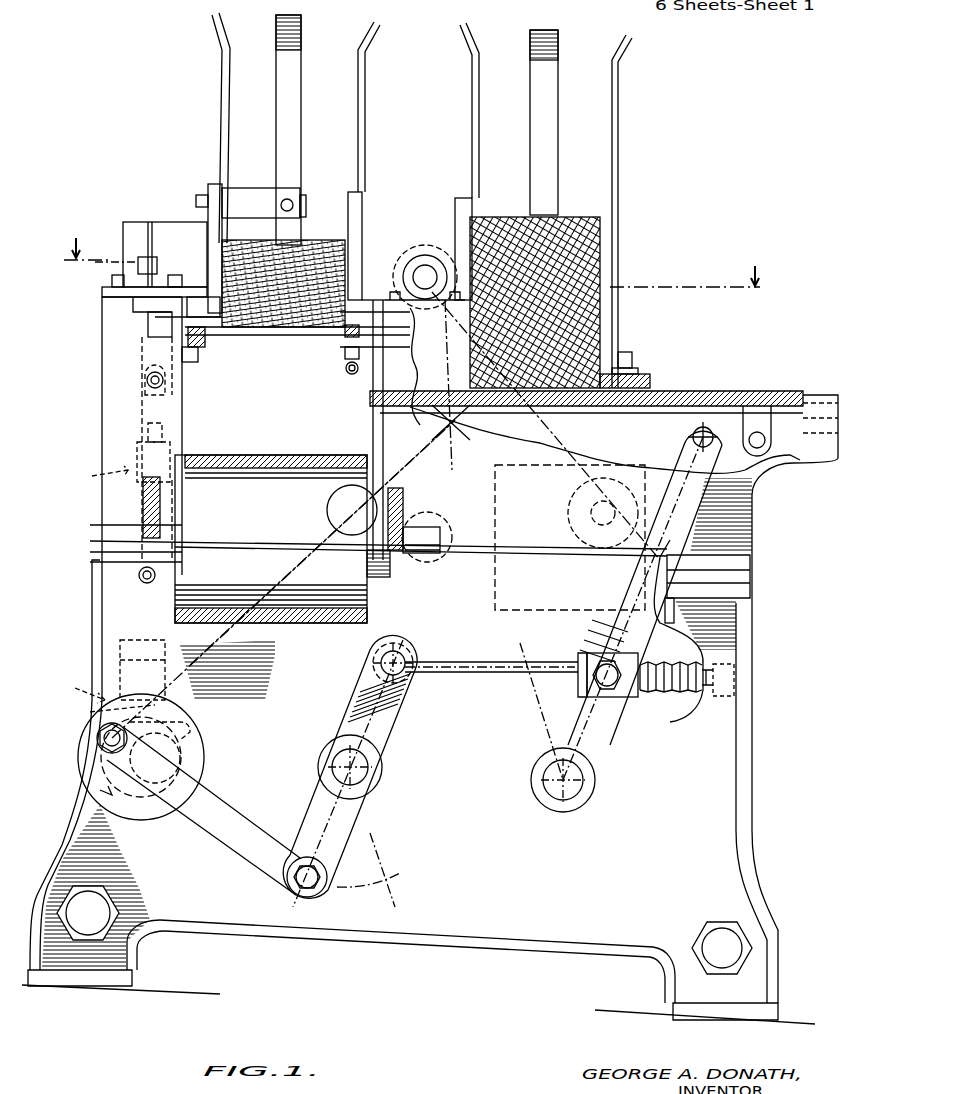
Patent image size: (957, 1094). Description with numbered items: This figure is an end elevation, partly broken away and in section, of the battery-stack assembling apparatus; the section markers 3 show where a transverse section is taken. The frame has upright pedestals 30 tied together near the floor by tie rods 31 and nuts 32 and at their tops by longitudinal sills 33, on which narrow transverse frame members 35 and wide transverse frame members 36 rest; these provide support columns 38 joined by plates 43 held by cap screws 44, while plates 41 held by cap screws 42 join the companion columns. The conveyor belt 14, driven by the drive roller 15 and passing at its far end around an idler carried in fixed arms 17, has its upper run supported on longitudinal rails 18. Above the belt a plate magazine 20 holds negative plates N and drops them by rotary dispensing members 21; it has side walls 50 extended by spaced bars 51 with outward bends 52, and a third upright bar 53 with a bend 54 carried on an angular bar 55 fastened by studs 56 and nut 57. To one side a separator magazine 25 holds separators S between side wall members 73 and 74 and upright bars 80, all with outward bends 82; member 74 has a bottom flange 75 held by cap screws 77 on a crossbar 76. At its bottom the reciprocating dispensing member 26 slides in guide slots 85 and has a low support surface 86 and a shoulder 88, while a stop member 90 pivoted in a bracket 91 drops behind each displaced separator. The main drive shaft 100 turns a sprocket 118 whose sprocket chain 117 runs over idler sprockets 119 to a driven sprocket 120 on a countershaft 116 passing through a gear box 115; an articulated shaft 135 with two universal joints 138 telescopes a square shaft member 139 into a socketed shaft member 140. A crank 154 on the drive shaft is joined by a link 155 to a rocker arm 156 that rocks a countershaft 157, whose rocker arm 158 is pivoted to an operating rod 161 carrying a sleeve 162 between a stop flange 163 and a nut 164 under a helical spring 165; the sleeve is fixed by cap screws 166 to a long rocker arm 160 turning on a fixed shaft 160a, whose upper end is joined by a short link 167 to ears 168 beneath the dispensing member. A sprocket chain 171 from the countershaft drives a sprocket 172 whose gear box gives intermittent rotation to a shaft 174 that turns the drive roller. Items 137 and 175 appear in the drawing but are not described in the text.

The section line 3 is at (412, 253).
The flexible belt 14 is at (232, 456).
The drive roller 15 is at (271, 539).
The fixed arms 17 is at (143, 500).
The longitudinal rails 18 is at (255, 478).
The supply magazine 20 is at (211, 118).
The rotary dispensing members 21 is at (205, 340).
The separator magazine 25 is at (620, 137).
The reciprocating dispensing member 26 is at (705, 395).
The base members or pedestals 30 is at (744, 800).
The tie rods 31 is at (96, 905).
The nuts 32 is at (116, 915).
The longitudinal sills 33 is at (100, 545).
The narrow transverse frame members 35 is at (222, 540).
The wide transverse frame members 36 is at (540, 400).
The support column 38 is at (372, 412).
The plates 41 is at (105, 290).
The cap screws 42 is at (112, 274).
The plates 43 is at (546, 426).
The cap screws 44 is at (393, 292).
The side walls 50 is at (215, 186).
The spaced bars 51 is at (222, 78).
The outward bends 52 is at (215, 30).
The upright bar 53 is at (301, 104).
The bend 54 is at (296, 33).
The angular bar 55 is at (240, 190).
The studs 56 is at (196, 201).
The nut 57 is at (198, 195).
The side wall member 73 is at (471, 116).
The side wall member 74 is at (618, 99).
The bottom flange 75 is at (636, 368).
The crossbar 76 is at (640, 382).
The cap screws 77 is at (625, 352).
The upright bars 80 is at (548, 106).
The outward bend 82 is at (470, 45).
The guide slots 85 is at (433, 374).
The low support surface 86 is at (515, 395).
The shoulder 88 is at (596, 400).
The stop member 90 is at (345, 368).
The bracket 91 is at (354, 374).
The main drive shaft 100 is at (108, 765).
The gear box 115 is at (372, 244).
The countershaft 116 is at (424, 270).
The sprocket chain 117 is at (400, 607).
The sprocket 118 is at (185, 728).
The idler sprockets 119 is at (328, 500).
The driven sprocket 120 is at (435, 245).
The articulated shaft 135 is at (92, 478).
The arrow 137 is at (106, 676).
The universal joints 138 is at (143, 379).
The square shaft member 139 is at (146, 428).
The shaft member 140 is at (137, 456).
The crank 154 is at (98, 736).
The link 155 is at (225, 790).
The rocker arm 156 is at (355, 815).
The countershaft 157 is at (368, 762).
The rocker arm 158 is at (398, 708).
The rocker arm 160 is at (630, 583).
The fixed shaft 160a is at (583, 790).
The operating rod 161 is at (468, 660).
The sleeve 162 is at (592, 655).
The stop flange 163 is at (572, 660).
The nut 164 is at (735, 662).
The helical spring 165 is at (670, 662).
The cap screws 166 is at (630, 692).
The short link 167 is at (725, 420).
The ears 168 is at (762, 405).
The sprocket chain 171 is at (595, 445).
The sprocket 172 is at (575, 530).
The shaft 174 is at (440, 560).
The housing 175 is at (570, 537).
The negative plates N is at (320, 241).
The separators S is at (575, 218).